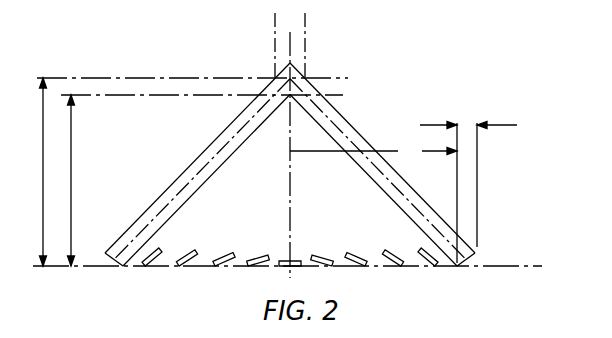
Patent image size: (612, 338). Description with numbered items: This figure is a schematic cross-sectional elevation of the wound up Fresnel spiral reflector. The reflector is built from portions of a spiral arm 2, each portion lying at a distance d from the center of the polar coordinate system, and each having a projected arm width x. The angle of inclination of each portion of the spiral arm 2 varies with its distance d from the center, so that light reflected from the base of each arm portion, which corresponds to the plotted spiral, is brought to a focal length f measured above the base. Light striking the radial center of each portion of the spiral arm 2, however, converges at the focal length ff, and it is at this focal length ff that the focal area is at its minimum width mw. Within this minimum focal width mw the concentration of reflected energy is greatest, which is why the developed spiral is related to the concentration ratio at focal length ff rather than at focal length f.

The spiral arm 2 is at (427, 264).
The minimum focal width mw is at (247, 24).
The focal length ff is at (53, 172).
The focal length f is at (78, 180).
The distance d is at (373, 152).
The projected arm width x is at (475, 189).